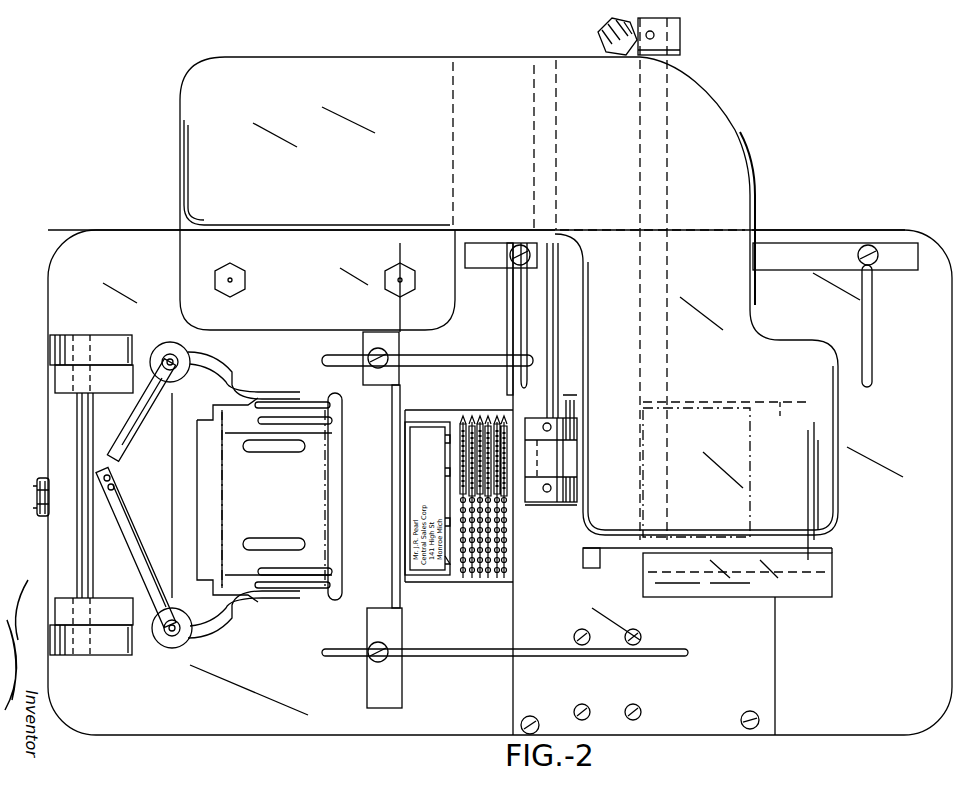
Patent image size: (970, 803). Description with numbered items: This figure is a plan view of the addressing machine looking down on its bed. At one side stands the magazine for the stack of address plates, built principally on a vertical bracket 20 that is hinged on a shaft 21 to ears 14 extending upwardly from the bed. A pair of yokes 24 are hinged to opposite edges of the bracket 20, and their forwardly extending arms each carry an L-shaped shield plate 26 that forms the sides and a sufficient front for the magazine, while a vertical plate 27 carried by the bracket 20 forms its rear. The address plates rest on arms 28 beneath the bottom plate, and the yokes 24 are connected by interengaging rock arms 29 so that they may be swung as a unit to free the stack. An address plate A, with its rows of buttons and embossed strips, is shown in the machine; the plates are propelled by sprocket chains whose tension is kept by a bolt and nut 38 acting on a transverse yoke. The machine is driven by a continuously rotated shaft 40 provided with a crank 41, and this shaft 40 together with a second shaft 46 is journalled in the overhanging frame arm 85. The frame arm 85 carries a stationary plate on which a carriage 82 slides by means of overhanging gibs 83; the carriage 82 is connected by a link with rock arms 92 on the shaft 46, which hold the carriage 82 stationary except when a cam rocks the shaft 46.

The ears 14 is at (120, 646).
The vertical bracket 20 is at (124, 495).
The shaft 21 is at (78, 545).
The yokes 24 is at (268, 383).
The L-shaped shield plate 26 is at (318, 398).
The vertical plate 27 is at (198, 520).
The arms 28 is at (275, 452).
The rock arms 29 is at (126, 428).
The nut 38 is at (48, 498).
The continuously rotated shaft 40 is at (657, 128).
The crank 41 is at (603, 38).
The shaft 46 is at (533, 393).
The carriage 82 is at (726, 469).
The overhanging gibs 83 is at (806, 593).
The overhanging frame arm 85 is at (820, 432).
The rock arms 92 is at (532, 502).
The address plate A is at (459, 578).